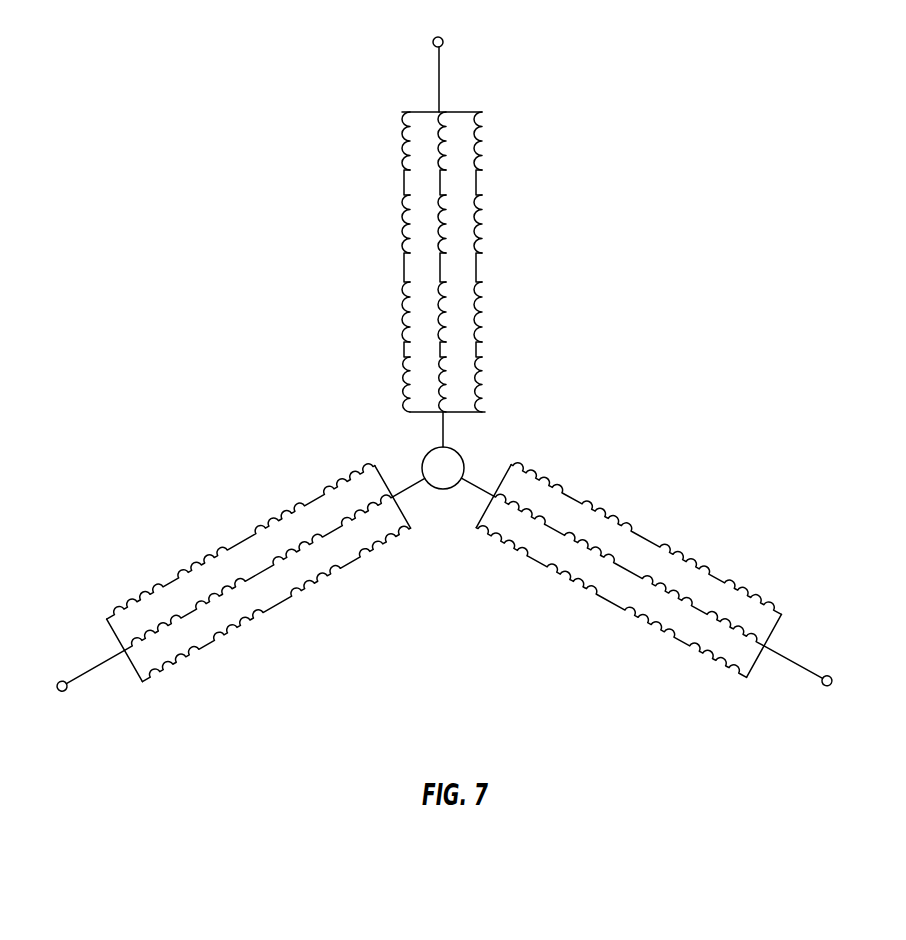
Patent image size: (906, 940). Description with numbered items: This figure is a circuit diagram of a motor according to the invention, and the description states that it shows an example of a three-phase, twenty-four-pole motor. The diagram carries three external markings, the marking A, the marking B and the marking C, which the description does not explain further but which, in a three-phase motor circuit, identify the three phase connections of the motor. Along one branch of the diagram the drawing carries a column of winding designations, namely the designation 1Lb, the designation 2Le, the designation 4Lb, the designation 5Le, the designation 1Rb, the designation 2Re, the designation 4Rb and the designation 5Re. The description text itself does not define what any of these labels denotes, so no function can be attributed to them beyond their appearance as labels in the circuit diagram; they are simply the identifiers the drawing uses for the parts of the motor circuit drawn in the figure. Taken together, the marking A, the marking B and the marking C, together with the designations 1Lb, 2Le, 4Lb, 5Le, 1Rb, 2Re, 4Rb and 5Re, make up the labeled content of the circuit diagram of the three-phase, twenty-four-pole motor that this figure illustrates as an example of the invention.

The phase A terminal A is at (434, 60).
The phase B terminal B is at (91, 687).
The phase C terminal C is at (798, 680).
The coil end 1Lb (first left coil beginning) 1Lb is at (421, 135).
The coil end 2Le (second left coil end) 2Le is at (421, 175).
The coil end 4Lb (fourth left coil beginning) 4Lb is at (420, 217).
The coil end 5Le (fifth left coil end) 5Le is at (421, 259).
The coil end 1Rb (first right coil beginning) 1Rb is at (421, 306).
The coil end 2Re (second right coil end) 2Re is at (421, 336).
The coil end 4Rb (fourth right coil beginning) 4Rb is at (420, 379).
The coil end 5Re (fifth right coil end) 5Re is at (422, 412).